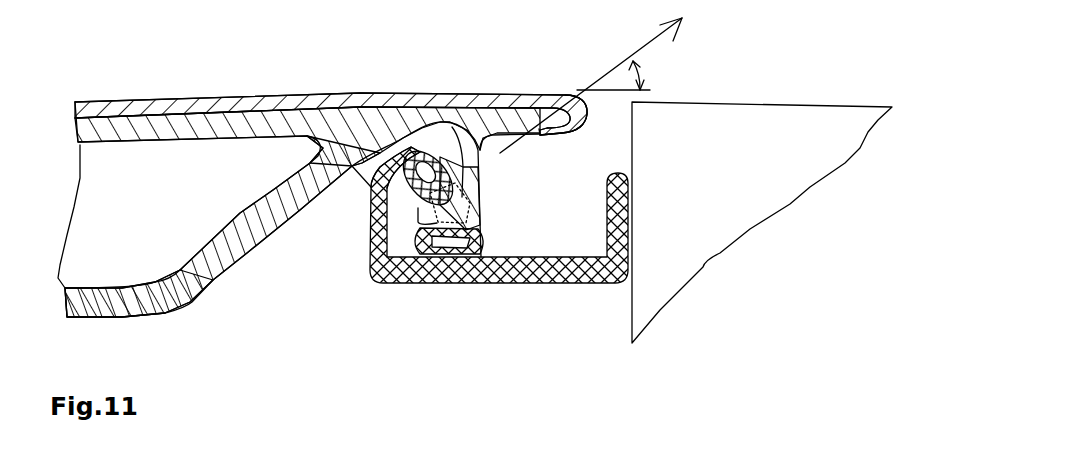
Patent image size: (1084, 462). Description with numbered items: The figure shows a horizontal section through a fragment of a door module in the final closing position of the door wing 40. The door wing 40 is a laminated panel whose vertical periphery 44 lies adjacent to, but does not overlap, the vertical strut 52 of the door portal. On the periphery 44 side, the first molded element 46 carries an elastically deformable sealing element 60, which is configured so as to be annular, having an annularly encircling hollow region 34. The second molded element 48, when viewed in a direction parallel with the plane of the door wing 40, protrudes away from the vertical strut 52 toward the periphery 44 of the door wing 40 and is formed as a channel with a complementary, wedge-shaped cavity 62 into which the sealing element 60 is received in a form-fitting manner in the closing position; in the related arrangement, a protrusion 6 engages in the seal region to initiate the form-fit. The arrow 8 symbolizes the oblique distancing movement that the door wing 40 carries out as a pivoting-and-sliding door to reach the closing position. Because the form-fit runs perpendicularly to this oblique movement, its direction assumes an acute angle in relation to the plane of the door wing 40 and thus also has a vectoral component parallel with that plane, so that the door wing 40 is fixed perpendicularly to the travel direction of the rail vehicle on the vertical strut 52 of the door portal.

The door wing 40 is at (197, 120).
The vertical periphery 44 is at (538, 100).
The first molded element 46 is at (471, 168).
The second molded element 48 is at (540, 270).
The annularly encircling hollow region 34 is at (423, 190).
The protrusion 6 is at (470, 210).
The sealing element 60 is at (485, 245).
The wedge-shaped cavity 62 is at (535, 202).
The arrow 8 is at (593, 85).
The vertical strut 52 is at (788, 192).